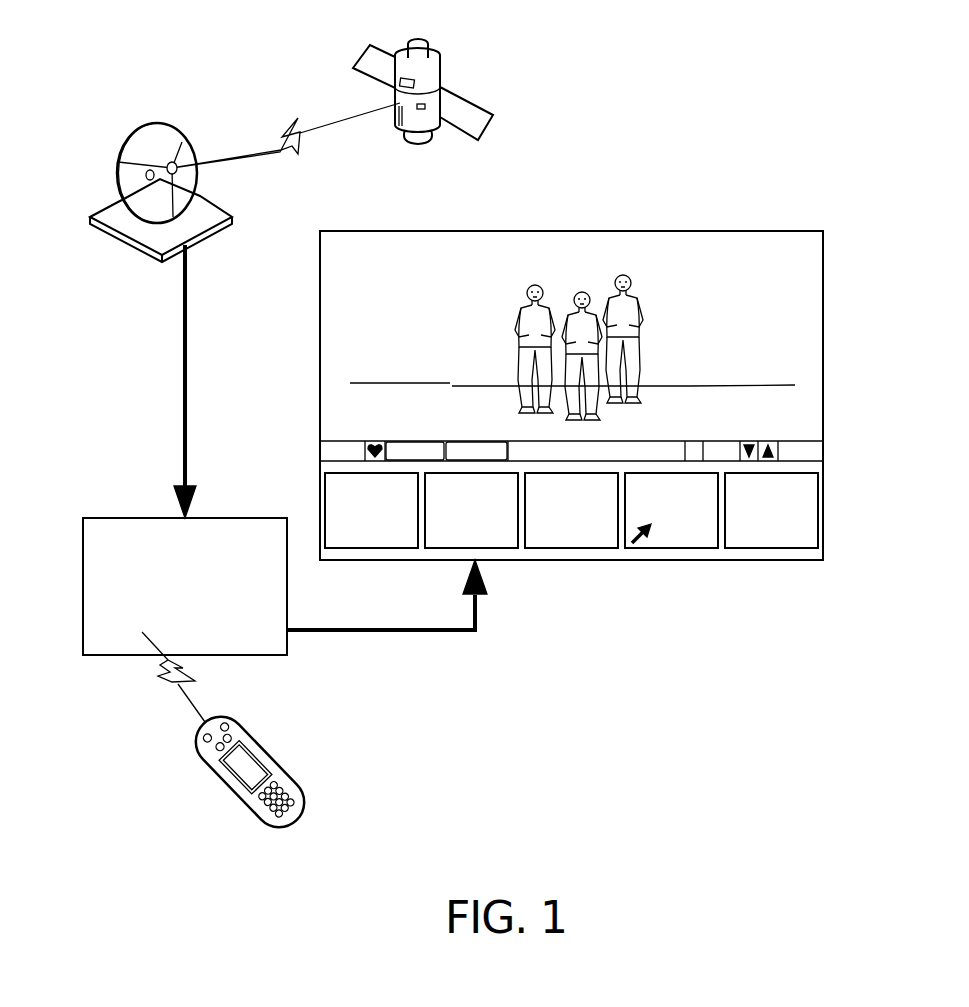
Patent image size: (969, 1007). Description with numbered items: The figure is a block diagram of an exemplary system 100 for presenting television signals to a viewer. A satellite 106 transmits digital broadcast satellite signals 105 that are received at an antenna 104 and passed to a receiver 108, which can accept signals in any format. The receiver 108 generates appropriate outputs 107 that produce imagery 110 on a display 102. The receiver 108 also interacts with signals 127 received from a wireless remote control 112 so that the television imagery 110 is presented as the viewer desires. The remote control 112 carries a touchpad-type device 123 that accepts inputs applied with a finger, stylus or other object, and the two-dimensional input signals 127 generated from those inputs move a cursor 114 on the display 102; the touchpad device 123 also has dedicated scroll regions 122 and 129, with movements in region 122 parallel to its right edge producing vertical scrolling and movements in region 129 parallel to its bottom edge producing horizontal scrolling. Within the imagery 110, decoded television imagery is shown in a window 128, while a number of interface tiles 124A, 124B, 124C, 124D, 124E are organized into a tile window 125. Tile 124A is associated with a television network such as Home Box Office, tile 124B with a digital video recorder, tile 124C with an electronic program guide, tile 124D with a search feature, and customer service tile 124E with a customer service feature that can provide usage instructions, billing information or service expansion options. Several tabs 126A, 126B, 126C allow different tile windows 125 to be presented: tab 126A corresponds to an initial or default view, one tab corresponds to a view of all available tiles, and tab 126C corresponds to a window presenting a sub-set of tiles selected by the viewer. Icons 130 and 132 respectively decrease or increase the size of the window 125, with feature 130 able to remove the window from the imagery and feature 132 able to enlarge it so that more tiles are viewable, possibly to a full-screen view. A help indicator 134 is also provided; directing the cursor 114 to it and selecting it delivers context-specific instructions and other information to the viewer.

The system 100 is at (741, 55).
The display 102 is at (375, 563).
The antenna 104 is at (193, 247).
The signals 105 is at (187, 393).
The satellite 106 is at (433, 85).
The outputs 107 is at (432, 632).
The receiver 108 is at (185, 586).
The imagery 110 is at (330, 314).
The wireless remote control 112 is at (276, 776).
The cursor 114 is at (647, 548).
The scroll region 122 is at (220, 736).
The touchpad-type device 123 is at (245, 767).
The tile 124A is at (340, 489).
The tile 124B is at (498, 538).
The tile 124C is at (583, 537).
The tile 124D is at (680, 542).
The customer service tile 124E is at (782, 538).
The window 125 is at (564, 537).
The tab 126A is at (373, 437).
The tab 126B is at (413, 438).
The tab 126C is at (473, 441).
The signals 127 is at (190, 667).
The window 128 is at (570, 334).
The scroll region 129 is at (293, 785).
The feature 130 is at (752, 440).
The feature 132 is at (770, 440).
The help indicator 134 is at (688, 440).